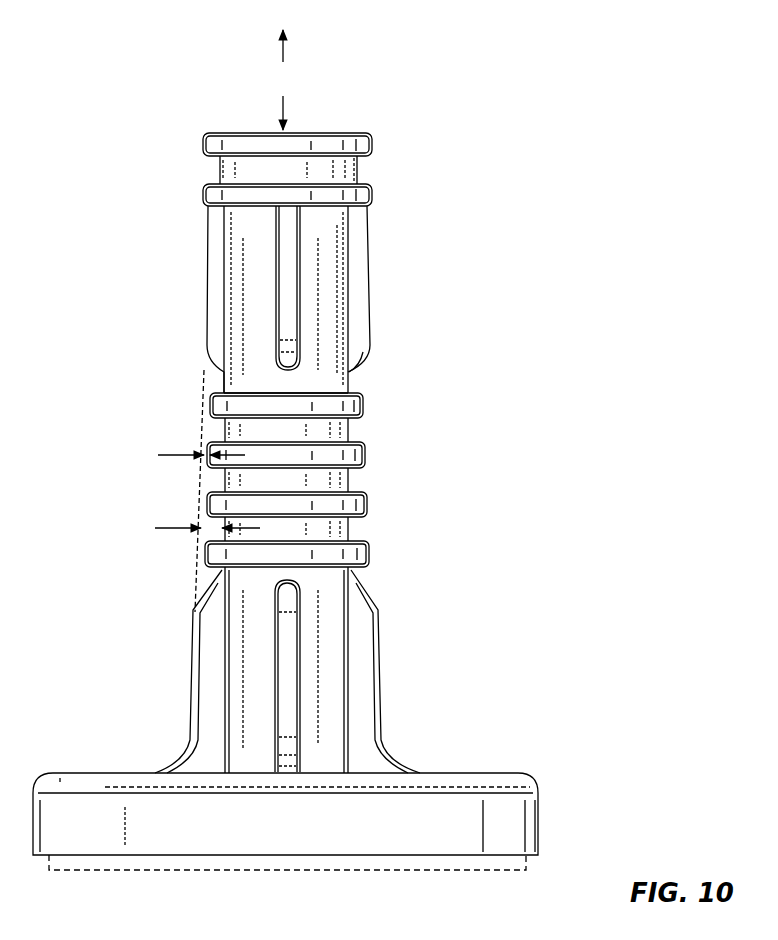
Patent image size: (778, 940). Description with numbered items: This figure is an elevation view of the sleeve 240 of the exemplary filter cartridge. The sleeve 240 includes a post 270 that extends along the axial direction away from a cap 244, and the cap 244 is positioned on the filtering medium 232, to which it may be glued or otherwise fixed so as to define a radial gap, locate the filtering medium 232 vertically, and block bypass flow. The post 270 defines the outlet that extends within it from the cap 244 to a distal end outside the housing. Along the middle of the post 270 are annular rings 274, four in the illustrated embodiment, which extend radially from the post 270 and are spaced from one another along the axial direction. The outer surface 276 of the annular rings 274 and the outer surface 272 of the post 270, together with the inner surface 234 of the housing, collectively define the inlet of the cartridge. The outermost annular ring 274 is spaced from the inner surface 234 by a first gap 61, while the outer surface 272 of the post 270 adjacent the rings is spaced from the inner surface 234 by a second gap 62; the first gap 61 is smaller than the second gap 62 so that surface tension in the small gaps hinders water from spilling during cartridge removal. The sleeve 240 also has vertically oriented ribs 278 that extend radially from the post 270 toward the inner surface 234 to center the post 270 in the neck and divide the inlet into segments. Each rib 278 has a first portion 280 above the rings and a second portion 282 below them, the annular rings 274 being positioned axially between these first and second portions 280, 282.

The sleeve 240 is at (517, 100).
The first portion 280 is at (216, 238).
The post 270 is at (325, 245).
The ribs 278 is at (357, 293).
The outer surface of post 272 is at (352, 377).
The outer surface of annular rings 276 is at (367, 407).
The annular rings 274 is at (360, 553).
The first gap 61 is at (170, 457).
The second gap 62 is at (166, 530).
The inner surface of housing 234 is at (200, 370).
The second portion 282 is at (205, 705).
The cap 244 is at (515, 820).
The filtering medium 232 is at (500, 873).